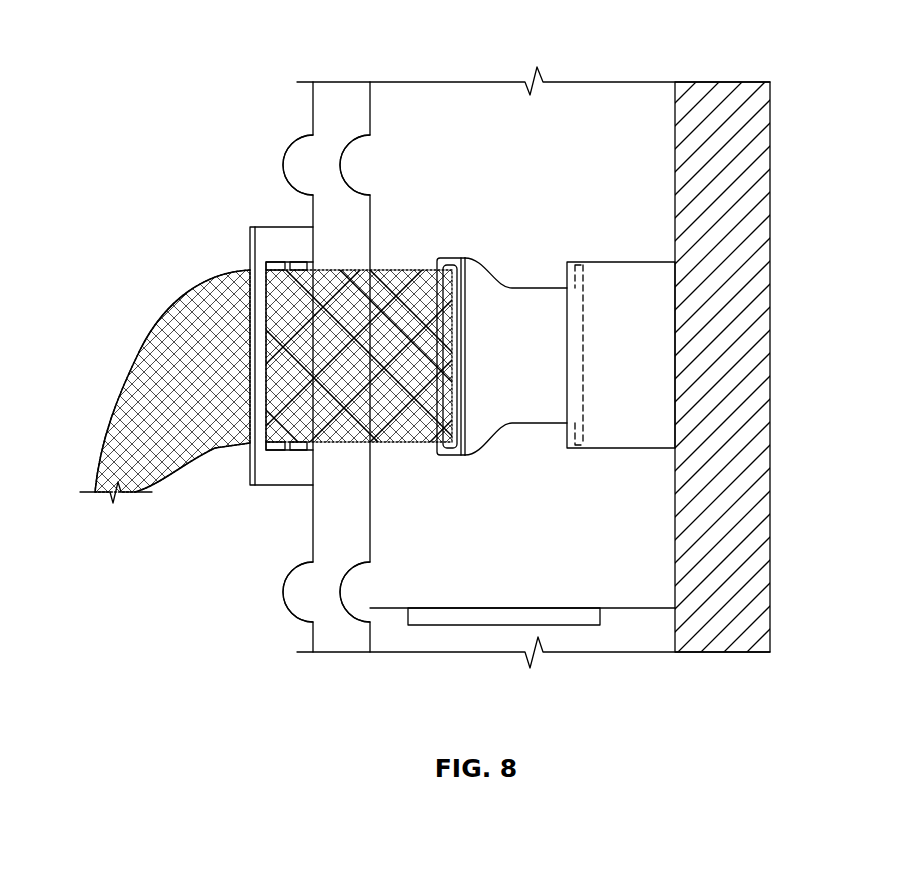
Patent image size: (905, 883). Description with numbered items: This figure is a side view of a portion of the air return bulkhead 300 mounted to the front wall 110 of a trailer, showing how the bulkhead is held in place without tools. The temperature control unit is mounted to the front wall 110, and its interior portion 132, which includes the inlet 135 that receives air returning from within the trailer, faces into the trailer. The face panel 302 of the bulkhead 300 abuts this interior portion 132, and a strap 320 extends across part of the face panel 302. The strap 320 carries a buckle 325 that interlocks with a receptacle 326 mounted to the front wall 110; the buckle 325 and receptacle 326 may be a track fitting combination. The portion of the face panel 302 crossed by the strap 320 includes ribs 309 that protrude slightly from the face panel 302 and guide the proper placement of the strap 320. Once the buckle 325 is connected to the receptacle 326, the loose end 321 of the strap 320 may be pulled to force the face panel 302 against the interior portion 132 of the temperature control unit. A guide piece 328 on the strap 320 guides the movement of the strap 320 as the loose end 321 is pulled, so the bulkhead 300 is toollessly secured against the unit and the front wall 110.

The front wall 110 is at (675, 167).
The interior portion 132 is at (452, 124).
The inlet 135 is at (477, 628).
The air return bulkhead 300 is at (355, 342).
The face panel 302 is at (313, 118).
The ribs 309 is at (285, 168).
The strap 320 is at (388, 284).
The loose end 321 is at (122, 432).
The buckle 325 is at (537, 298).
The receptacle 326 is at (603, 273).
The guide piece 328 is at (265, 228).